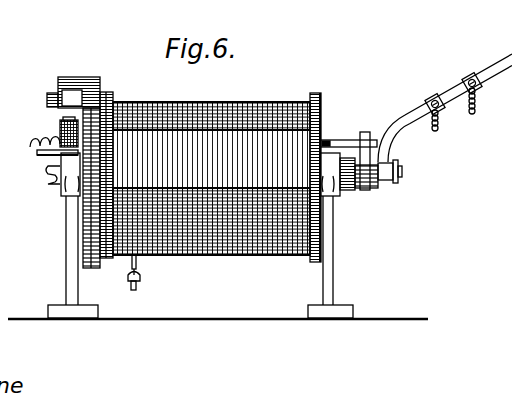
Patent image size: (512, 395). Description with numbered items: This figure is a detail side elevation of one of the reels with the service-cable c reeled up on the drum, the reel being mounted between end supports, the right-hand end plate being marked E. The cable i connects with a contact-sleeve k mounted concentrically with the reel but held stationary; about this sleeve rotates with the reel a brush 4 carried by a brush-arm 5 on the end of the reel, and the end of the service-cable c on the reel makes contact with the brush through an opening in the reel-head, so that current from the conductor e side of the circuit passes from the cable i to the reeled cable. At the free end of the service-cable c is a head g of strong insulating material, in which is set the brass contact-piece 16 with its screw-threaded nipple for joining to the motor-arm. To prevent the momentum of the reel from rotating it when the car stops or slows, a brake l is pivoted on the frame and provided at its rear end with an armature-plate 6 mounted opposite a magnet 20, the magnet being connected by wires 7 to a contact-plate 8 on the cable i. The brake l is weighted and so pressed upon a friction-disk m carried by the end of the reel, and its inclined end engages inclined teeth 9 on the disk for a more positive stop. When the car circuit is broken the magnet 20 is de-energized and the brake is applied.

The brake l is at (89, 78).
The armature-plate 6 is at (62, 110).
The magnet 20 is at (59, 132).
The wires 7 is at (31, 144).
The inclined teeth 9 is at (100, 156).
The friction-disk m is at (91, 199).
The conductor e is at (210, 177).
The service-cable c is at (136, 256).
The head g is at (141, 277).
The brass contact-piece 16 is at (134, 291).
The end plate E is at (328, 93).
The brush-arm 5 is at (348, 143).
The brush 4 is at (372, 172).
The contact-sleeve k is at (375, 176).
The cable i is at (418, 109).
The contact-plate 8 is at (458, 89).